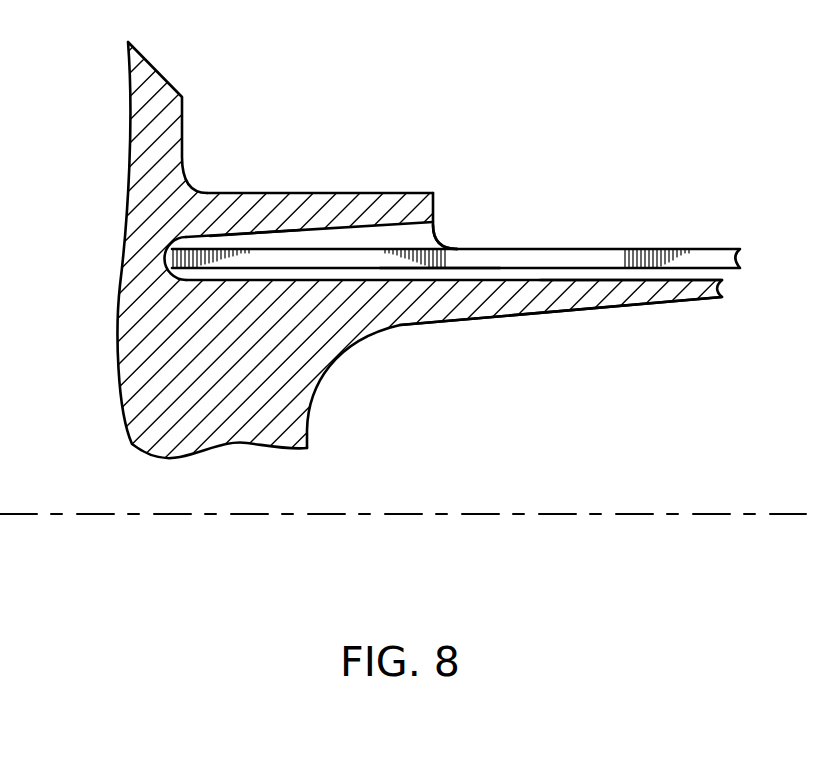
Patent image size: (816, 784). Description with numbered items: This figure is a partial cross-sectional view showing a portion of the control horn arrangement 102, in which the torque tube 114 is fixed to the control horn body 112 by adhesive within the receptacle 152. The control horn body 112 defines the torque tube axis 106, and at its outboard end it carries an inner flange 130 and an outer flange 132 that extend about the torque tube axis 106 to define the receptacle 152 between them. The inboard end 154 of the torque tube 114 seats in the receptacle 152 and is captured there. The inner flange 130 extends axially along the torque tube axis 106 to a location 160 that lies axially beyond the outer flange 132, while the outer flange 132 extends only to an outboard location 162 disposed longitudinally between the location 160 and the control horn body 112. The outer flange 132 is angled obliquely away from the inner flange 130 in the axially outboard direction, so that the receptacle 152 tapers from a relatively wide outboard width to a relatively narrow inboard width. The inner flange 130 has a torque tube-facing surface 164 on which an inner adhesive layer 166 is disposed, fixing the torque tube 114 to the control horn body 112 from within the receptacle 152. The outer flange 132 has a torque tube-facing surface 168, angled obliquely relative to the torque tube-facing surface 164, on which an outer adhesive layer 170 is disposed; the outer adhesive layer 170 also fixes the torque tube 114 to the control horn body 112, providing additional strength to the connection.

The control horn arrangement 102 is at (151, 537).
The torque tube axis 106 is at (762, 515).
The control horn body 112 is at (150, 381).
The torque tube 114 is at (694, 262).
The inner flange 130 is at (532, 297).
The outer flange 132 is at (300, 200).
The receptacle 152 is at (462, 221).
The inboard end 154 is at (290, 258).
The location 160 is at (480, 336).
The outboard location 162 is at (432, 192).
The torque tube-facing surface 164 is at (413, 280).
The inner adhesive layer 166 is at (598, 276).
The torque tube-facing surface 168 is at (236, 234).
The outer adhesive layer 170 is at (333, 240).